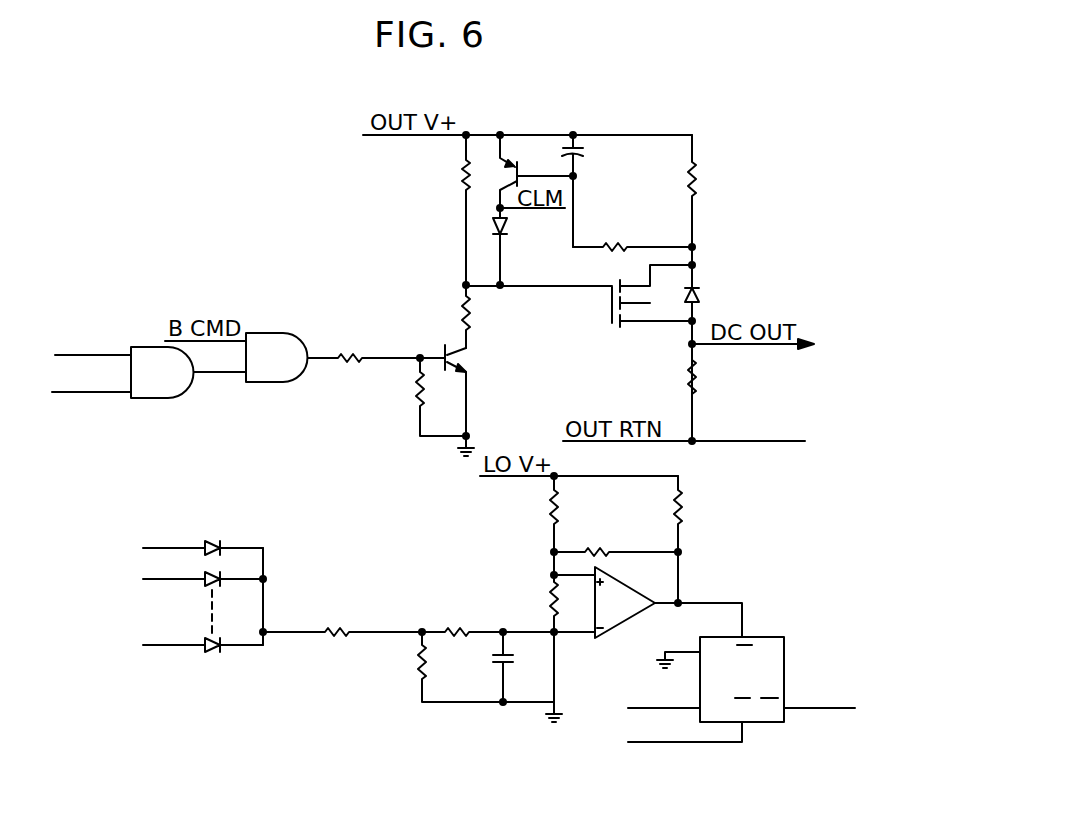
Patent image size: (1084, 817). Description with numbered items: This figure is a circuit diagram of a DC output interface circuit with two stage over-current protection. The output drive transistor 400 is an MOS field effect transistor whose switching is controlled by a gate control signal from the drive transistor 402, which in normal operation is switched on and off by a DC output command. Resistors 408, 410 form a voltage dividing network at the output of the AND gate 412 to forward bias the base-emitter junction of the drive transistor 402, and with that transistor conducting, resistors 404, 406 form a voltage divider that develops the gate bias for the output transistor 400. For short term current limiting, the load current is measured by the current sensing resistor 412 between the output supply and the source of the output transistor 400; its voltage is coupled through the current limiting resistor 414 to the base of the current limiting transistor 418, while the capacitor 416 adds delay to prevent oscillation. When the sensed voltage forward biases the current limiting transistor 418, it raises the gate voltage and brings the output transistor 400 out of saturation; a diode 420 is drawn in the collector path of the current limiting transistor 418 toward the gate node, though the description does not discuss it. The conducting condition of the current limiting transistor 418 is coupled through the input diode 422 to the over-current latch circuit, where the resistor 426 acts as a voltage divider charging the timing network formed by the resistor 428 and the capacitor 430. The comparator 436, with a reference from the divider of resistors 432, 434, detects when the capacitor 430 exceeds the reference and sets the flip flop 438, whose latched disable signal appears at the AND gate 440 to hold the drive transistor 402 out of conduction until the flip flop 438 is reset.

The output drive transistor 400 is at (611, 304).
The drive transistor 402 is at (445, 350).
The resistor 404 is at (460, 183).
The resistor 406 is at (470, 312).
The resistor 408 is at (342, 356).
The resistor 410 is at (416, 388).
The AND gate / current sensing resistor 412 is at (697, 186).
The current limiting resistor 414 is at (612, 246).
The capacitor 416 is at (580, 152).
The current limiting transistor 418 is at (519, 170).
The diode 420 is at (503, 232).
The input diode 422 is at (218, 548).
The resistor 426 is at (416, 662).
The resistor 428 is at (450, 629).
The capacitor 430 is at (502, 664).
The resistor 432 is at (558, 506).
The resistor 434 is at (551, 591).
The comparator 436 is at (616, 620).
The flip flop 438 is at (762, 640).
The AND gate 440 is at (172, 390).